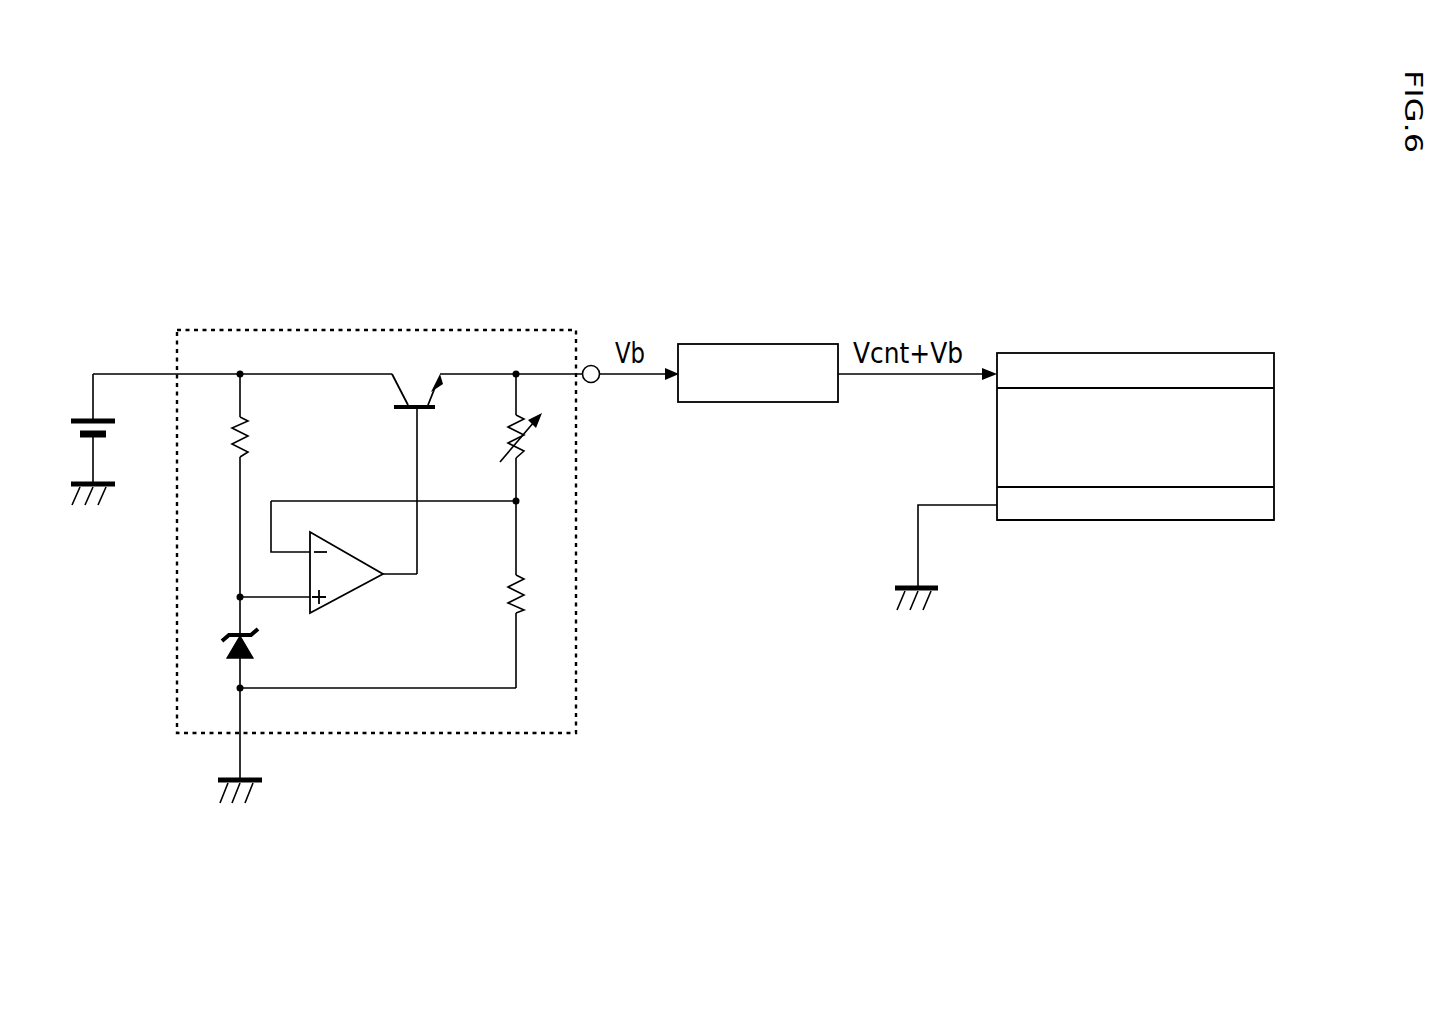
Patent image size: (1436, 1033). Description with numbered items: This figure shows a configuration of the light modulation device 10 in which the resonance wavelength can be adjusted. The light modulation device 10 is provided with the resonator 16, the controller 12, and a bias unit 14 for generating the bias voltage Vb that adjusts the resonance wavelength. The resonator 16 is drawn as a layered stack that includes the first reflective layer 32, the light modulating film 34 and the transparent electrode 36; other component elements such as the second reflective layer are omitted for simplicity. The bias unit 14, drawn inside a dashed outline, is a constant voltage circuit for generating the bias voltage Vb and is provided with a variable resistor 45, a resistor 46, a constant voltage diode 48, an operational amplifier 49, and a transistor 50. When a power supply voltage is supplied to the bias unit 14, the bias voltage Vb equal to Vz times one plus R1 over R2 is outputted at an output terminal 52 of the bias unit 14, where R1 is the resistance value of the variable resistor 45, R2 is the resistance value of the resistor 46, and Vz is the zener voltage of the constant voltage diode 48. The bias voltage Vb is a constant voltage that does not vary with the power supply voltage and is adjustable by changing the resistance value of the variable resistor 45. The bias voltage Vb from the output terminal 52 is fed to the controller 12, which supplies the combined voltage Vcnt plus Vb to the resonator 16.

The light modulation device 10 is at (737, 833).
The controller 12 is at (760, 402).
The bias unit 14 is at (284, 330).
The resonator 16 is at (1176, 421).
The first reflective layer 32 is at (1267, 503).
The light modulating film 34 is at (1267, 437).
The transparent electrode 36 is at (1267, 372).
The variable resistor 45 is at (502, 436).
The resistor 46 is at (502, 592).
The constant voltage diode 48 is at (256, 643).
The operational amplifier 49 is at (348, 598).
The transistor 50 is at (390, 394).
The output terminal 52 is at (594, 382).